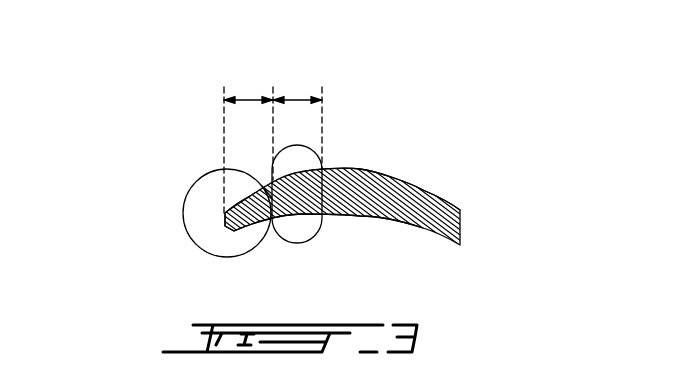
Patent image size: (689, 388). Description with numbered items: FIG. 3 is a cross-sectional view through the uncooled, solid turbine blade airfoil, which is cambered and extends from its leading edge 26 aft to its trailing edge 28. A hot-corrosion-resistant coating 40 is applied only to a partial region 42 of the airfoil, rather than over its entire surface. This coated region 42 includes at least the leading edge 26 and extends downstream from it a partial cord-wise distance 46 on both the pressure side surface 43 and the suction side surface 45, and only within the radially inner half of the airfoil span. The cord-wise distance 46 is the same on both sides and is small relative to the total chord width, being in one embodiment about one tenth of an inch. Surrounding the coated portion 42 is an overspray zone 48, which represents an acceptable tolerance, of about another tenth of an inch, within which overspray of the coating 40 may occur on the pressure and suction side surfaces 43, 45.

The leading edge 26 is at (227, 213).
The trailing edge 28 is at (462, 230).
The hot-corrosion-resistant coating 40 is at (270, 195).
The partial region 42 is at (185, 200).
The pressure side surface 43 is at (350, 214).
The suction side surface 45 is at (395, 177).
The partial cord-wise distance 46 is at (248, 97).
The overspray zone 48 is at (300, 146).